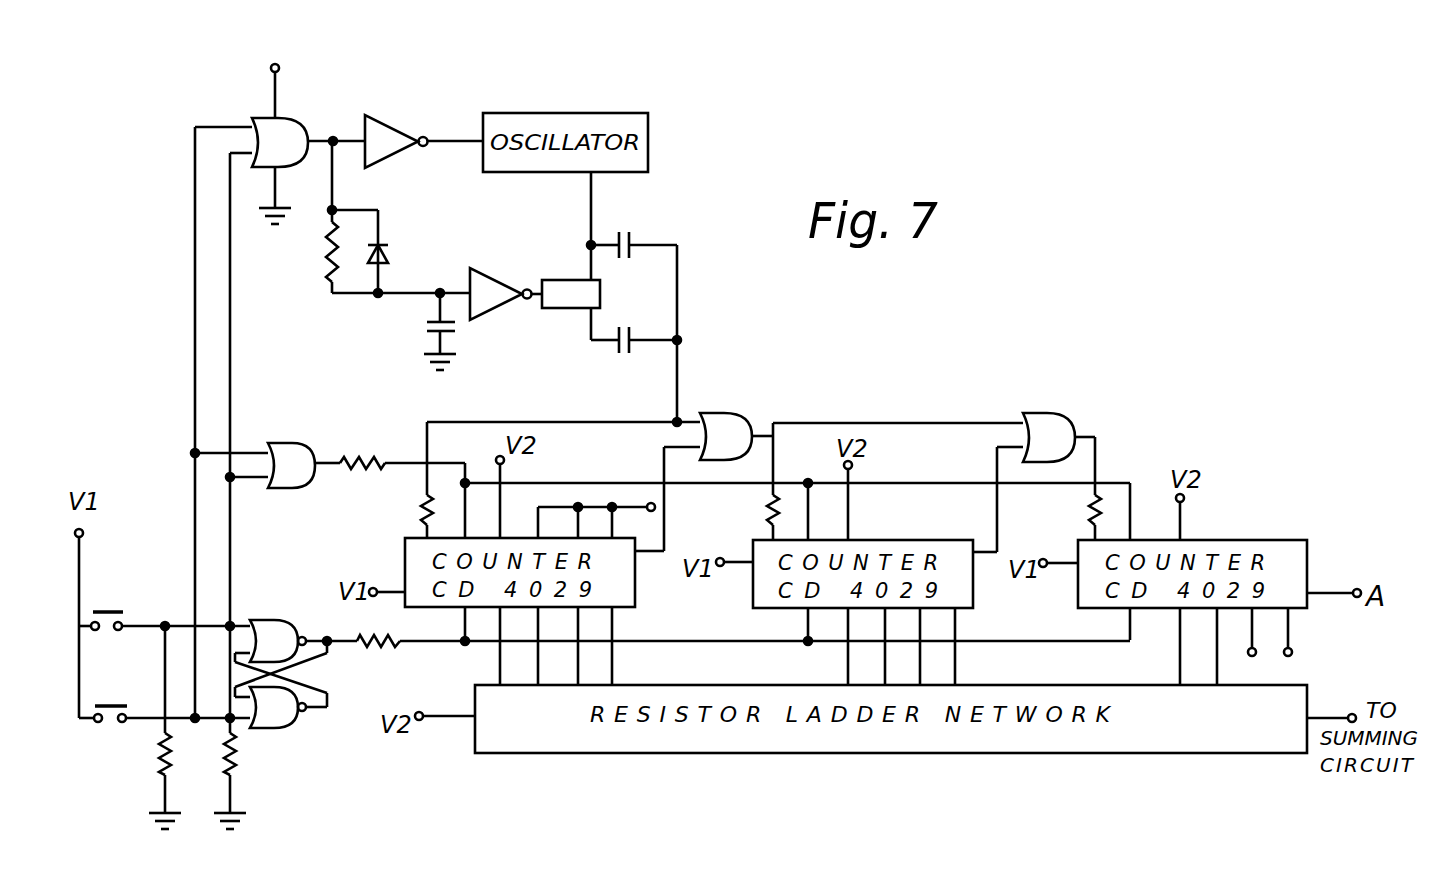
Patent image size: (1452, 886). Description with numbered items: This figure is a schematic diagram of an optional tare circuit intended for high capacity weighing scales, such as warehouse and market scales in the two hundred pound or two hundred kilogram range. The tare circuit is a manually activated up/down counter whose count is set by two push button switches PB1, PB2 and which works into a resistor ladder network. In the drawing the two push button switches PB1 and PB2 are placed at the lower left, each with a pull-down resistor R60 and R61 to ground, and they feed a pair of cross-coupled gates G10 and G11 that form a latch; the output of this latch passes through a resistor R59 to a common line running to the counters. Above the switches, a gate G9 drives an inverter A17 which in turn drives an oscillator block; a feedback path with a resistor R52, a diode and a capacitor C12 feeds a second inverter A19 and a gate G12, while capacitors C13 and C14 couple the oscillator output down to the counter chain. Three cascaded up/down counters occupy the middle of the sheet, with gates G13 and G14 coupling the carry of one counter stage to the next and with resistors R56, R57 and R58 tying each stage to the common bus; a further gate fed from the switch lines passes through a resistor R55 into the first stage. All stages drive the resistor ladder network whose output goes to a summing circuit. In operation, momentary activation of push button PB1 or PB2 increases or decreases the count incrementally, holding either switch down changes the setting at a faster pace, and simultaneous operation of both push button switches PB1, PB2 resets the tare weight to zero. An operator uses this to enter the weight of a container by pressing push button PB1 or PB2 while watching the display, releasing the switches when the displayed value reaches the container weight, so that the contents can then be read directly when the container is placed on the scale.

The OR gate G9 is at (280, 130).
The inverter A17 is at (424, 156).
The resistor R52 is at (371, 219).
The capacitor C12 is at (417, 331).
The inverter A19 is at (506, 306).
The gate G12 is at (571, 294).
The capacitor C13 is at (634, 264).
The capacitor C14 is at (636, 361).
The OR gate G13 is at (704, 466).
The OR gate G14 is at (1034, 467).
The resistor R55 is at (330, 457).
The resistor R56 is at (402, 480).
The resistor R57 is at (746, 517).
The resistor R58 is at (1070, 517).
The resistor R59 is at (718, 659).
The resistor R60 is at (145, 727).
The resistor R61 is at (252, 773).
The NOR gate G10 is at (287, 646).
The NOR gate G11 is at (292, 698).
The push button switch PB1 is at (164, 606).
The push button switch PB2 is at (164, 699).